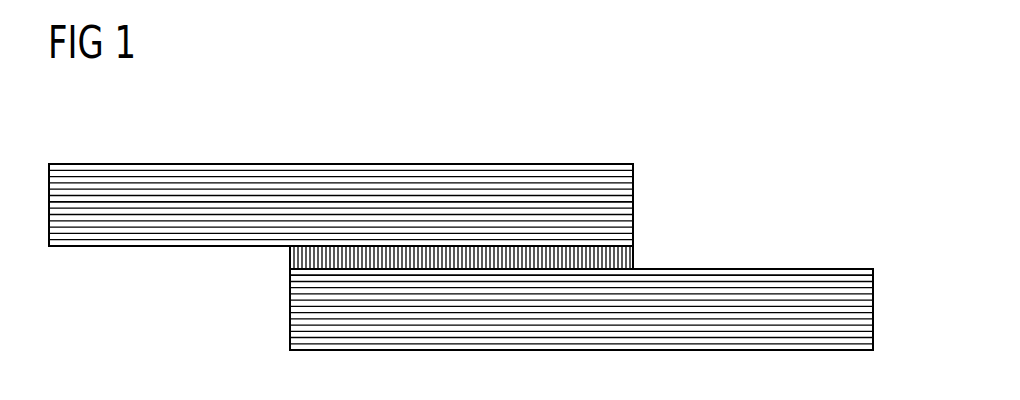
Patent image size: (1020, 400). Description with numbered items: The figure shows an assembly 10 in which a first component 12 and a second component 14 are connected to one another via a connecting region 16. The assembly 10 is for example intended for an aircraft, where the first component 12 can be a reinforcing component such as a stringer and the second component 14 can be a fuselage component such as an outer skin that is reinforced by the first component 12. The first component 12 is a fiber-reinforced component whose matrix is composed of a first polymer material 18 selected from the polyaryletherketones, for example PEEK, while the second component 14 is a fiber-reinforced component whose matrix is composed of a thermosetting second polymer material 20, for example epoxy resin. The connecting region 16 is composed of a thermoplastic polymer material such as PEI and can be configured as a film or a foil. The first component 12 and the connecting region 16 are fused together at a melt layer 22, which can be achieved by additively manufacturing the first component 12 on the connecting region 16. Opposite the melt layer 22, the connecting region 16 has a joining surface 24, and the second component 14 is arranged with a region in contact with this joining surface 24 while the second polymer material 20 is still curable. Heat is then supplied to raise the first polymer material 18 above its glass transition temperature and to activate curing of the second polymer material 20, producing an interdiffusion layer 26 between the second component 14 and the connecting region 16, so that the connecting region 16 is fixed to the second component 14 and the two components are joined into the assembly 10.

The assembly 10 is at (234, 135).
The first component 12 is at (74, 237).
The second component 14 is at (823, 282).
The connecting region 16 is at (261, 251).
The first polymer material 18 is at (130, 237).
The second polymer material 20 is at (771, 282).
The melt layer 22 is at (633, 246).
The joining surface 24 is at (287, 269).
The interdiffusion layer 26 is at (360, 270).